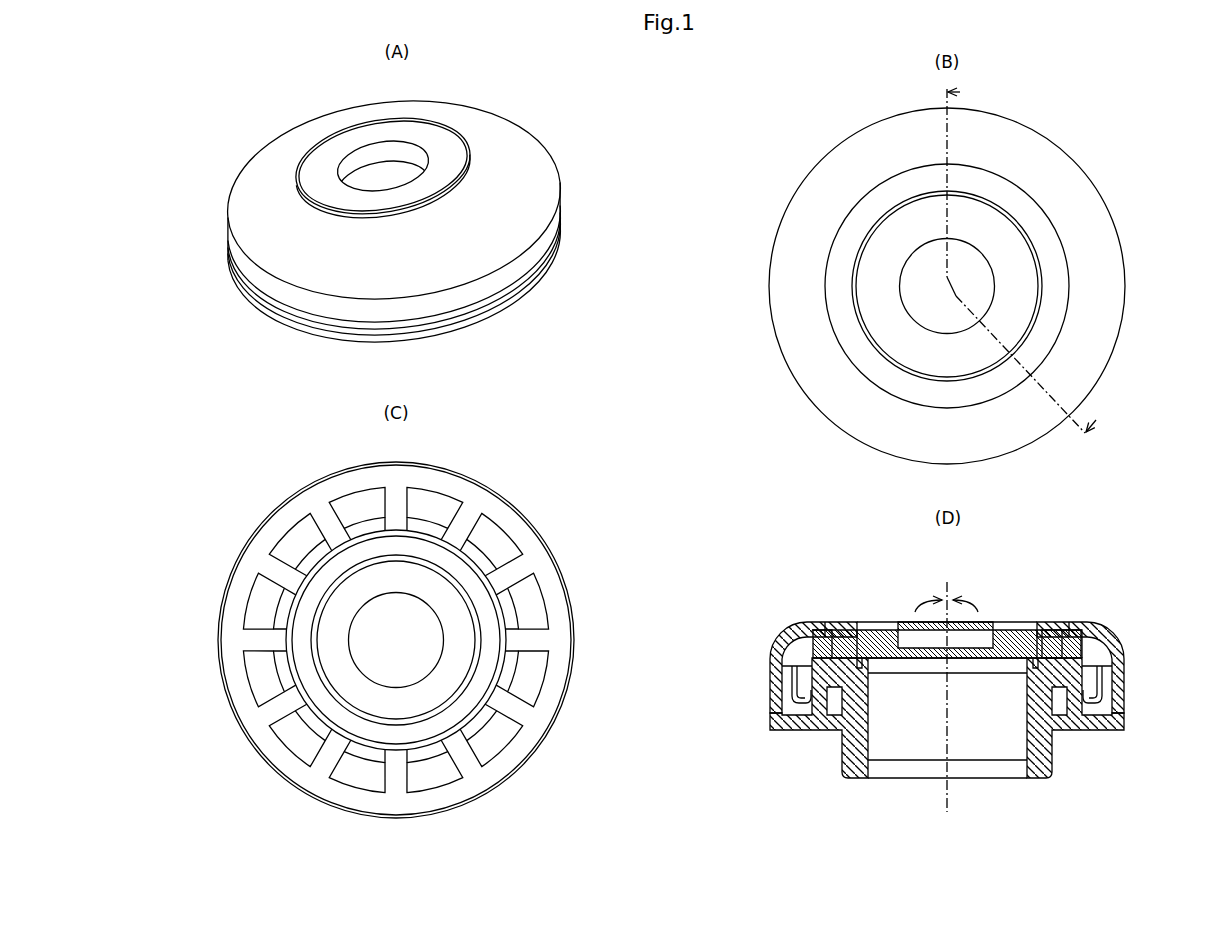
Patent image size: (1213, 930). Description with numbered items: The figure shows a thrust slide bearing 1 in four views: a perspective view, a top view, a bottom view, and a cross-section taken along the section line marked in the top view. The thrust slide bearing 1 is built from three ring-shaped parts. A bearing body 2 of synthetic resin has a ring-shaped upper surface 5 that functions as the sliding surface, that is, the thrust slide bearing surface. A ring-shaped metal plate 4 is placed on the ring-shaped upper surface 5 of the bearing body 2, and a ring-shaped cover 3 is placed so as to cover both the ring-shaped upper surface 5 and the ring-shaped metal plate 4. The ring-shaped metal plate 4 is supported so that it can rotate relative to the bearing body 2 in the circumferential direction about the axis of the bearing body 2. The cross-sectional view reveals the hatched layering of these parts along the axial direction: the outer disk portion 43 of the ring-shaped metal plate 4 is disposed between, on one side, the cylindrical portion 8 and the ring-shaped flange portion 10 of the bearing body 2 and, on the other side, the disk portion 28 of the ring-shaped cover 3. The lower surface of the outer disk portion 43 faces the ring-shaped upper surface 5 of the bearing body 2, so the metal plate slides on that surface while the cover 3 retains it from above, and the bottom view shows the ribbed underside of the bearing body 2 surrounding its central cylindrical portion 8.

The thrust slide bearing 1 is at (611, 84).
The bearing body 2 is at (547, 282).
The ring-shaped cover 3 is at (556, 133).
The ring-shaped metal plate 4 is at (430, 146).
The ring-shaped upper surface 5 is at (1050, 651).
The cylindrical portion 8 is at (842, 752).
The ring-shaped flange portion 10 is at (1065, 732).
The disk portion 28 is at (832, 625).
The outer disk portion 43 is at (1069, 636).